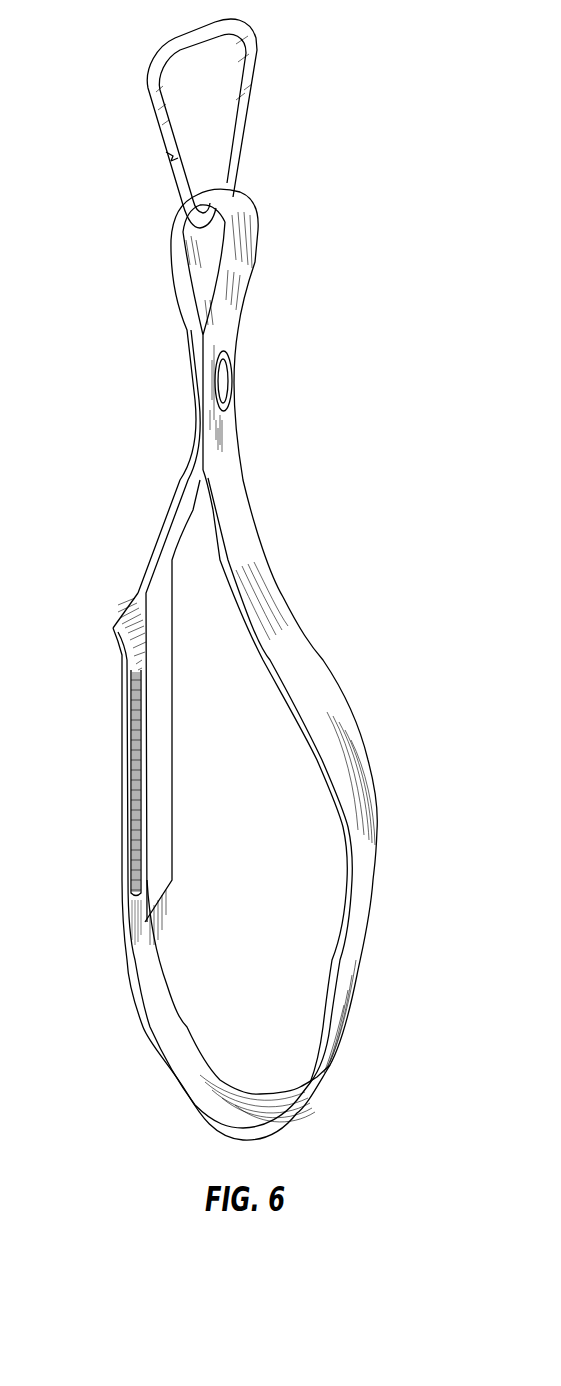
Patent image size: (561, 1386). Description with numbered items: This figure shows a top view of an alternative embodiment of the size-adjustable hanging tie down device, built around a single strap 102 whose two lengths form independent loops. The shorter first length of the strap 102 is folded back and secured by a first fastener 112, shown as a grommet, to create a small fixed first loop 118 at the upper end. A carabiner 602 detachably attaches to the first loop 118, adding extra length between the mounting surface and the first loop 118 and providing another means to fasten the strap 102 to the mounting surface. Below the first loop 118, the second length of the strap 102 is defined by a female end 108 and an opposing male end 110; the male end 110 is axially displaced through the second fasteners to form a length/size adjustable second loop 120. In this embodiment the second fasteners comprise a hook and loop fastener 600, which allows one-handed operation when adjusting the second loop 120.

The carabiner 602 is at (257, 50).
The first loop 118 is at (147, 202).
The first fastener 112 is at (232, 378).
The male end 110 is at (114, 626).
The hook and loop fastener 600 is at (128, 787).
The female end 108 is at (158, 880).
The strap 102 is at (141, 1020).
The second loop 120 is at (378, 1125).